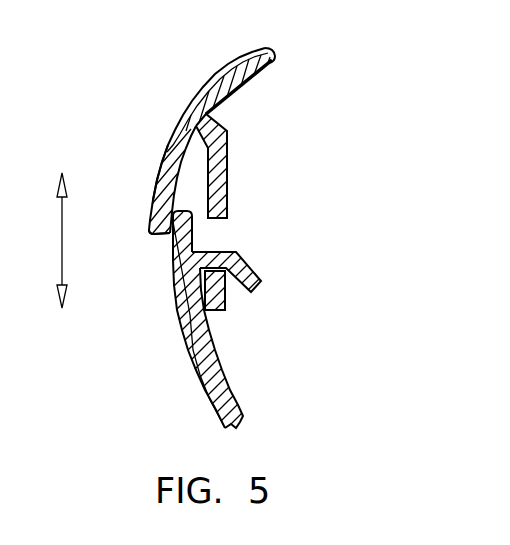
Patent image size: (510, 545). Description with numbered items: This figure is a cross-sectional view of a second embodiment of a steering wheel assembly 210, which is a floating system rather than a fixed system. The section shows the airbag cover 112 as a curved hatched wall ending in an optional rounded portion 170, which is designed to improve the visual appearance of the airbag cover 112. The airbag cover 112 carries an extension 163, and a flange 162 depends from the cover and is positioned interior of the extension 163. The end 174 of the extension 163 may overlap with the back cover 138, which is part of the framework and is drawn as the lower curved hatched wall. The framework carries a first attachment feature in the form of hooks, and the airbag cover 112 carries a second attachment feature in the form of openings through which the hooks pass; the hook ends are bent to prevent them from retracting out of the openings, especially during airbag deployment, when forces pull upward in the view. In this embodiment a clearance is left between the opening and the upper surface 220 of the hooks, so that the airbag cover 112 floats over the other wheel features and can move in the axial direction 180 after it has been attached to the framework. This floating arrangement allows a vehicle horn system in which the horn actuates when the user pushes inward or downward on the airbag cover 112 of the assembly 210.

The airbag cover 112 is at (208, 82).
The rounded portion 170 is at (250, 54).
The extension 163 is at (156, 172).
The end of the extension 174 is at (148, 243).
The flange 162 is at (229, 178).
The back cover 138 is at (220, 375).
The upper surface of the hooks 220 is at (179, 322).
The axial direction 180 is at (63, 245).
The steering wheel assembly 210 is at (148, 115).